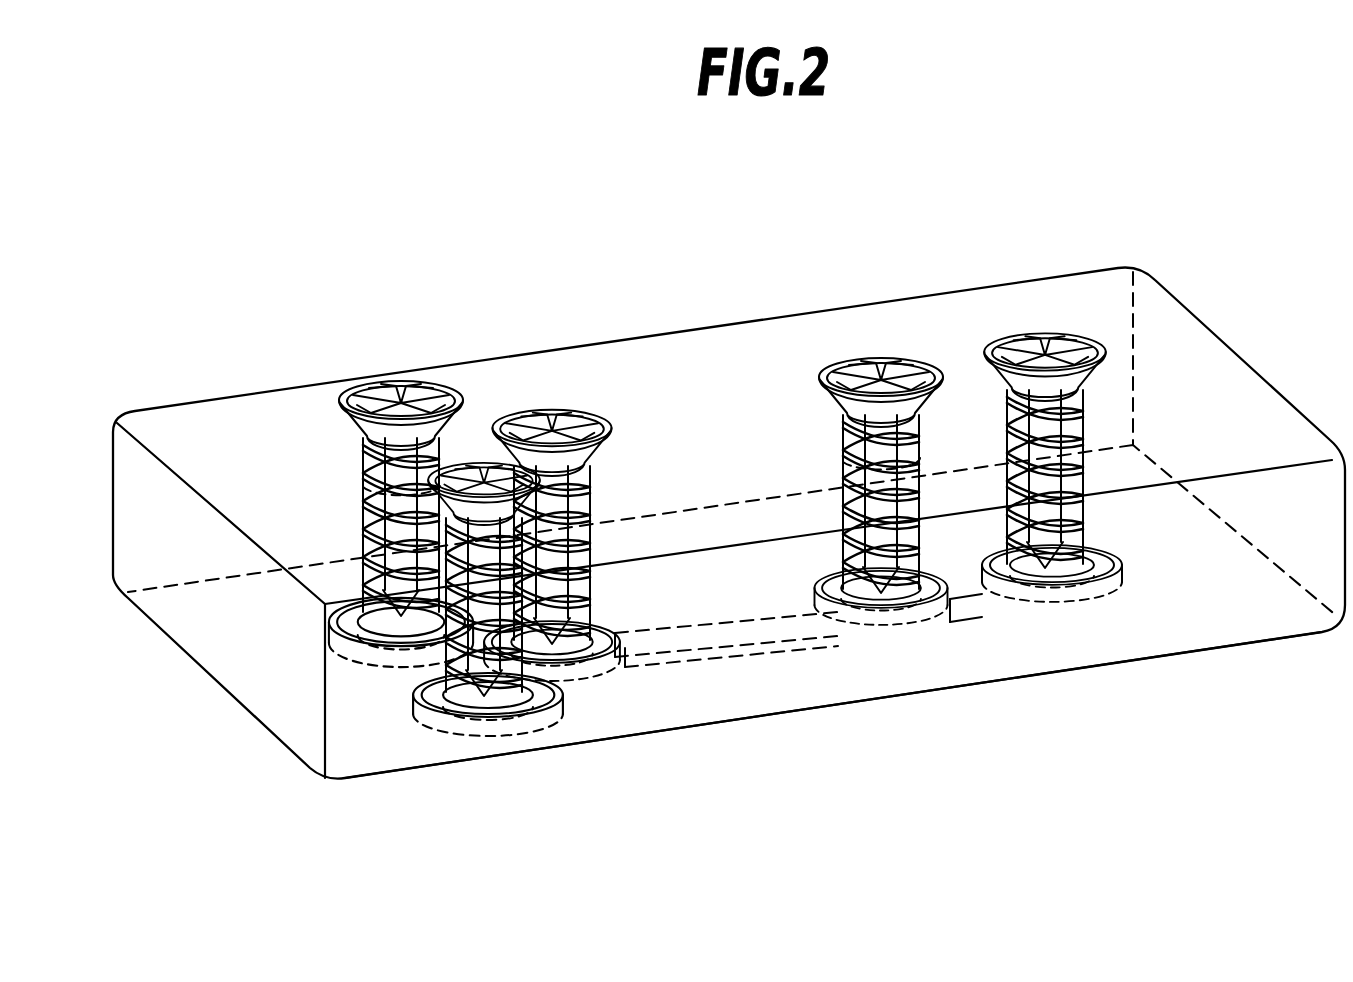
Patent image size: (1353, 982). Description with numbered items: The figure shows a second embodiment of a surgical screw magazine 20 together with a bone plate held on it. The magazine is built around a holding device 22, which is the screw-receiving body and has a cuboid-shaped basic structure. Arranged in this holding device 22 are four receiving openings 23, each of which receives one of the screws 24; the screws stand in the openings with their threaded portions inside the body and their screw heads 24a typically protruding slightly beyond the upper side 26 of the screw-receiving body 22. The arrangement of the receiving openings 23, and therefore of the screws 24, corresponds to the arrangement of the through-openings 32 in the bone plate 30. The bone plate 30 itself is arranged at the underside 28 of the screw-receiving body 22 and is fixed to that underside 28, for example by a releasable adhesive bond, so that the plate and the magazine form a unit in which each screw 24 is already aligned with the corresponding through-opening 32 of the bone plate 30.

The surgical screw magazine 20 is at (720, 268).
The holding device 22 is at (203, 390).
The receiving openings 23 is at (363, 485).
The screws 24 is at (722, 445).
The screw heads 24a is at (603, 415).
The upper side 26 is at (1167, 352).
The underside 28 is at (1188, 676).
The bone plate 30 is at (722, 650).
The through-openings 32 is at (381, 645).